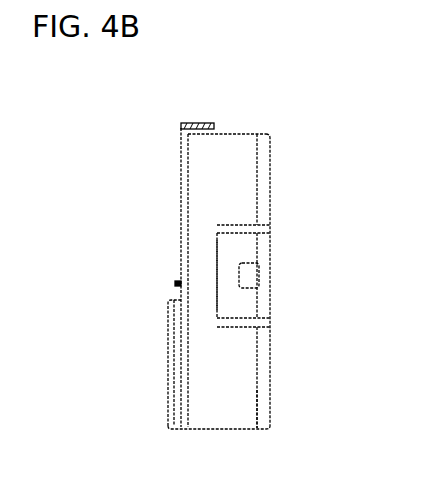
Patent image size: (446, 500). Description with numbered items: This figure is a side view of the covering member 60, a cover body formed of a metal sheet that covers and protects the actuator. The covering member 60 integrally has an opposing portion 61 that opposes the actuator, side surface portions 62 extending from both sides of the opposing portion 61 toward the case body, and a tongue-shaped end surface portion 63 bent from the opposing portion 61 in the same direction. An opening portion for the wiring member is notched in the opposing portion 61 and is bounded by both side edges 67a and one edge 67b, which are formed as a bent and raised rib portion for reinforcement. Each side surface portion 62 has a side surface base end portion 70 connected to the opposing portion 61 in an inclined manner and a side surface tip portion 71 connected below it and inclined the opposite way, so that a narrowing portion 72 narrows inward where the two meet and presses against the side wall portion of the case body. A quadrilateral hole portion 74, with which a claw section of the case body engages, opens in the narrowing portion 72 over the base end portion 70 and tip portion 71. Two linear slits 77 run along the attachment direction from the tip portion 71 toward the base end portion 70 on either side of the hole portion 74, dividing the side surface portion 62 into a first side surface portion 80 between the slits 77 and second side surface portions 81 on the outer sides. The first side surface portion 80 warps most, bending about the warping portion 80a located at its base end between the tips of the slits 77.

The covering member 60 is at (272, 79).
The opposing portion 61 is at (183, 170).
The side surface portion 62 is at (216, 412).
The end surface portion 63 is at (197, 122).
The side edge 67a is at (170, 342).
The one edge 67b is at (176, 283).
The side surface base end portion 70 is at (245, 153).
The side surface tip portion 71 is at (270, 175).
The narrowing portion 72 is at (258, 410).
The hole portion 74 is at (253, 278).
The slit 77 is at (250, 232).
The first side surface portion 80 is at (224, 275).
The warping portion 80a is at (218, 263).
The second side surface portion 81 is at (235, 198).